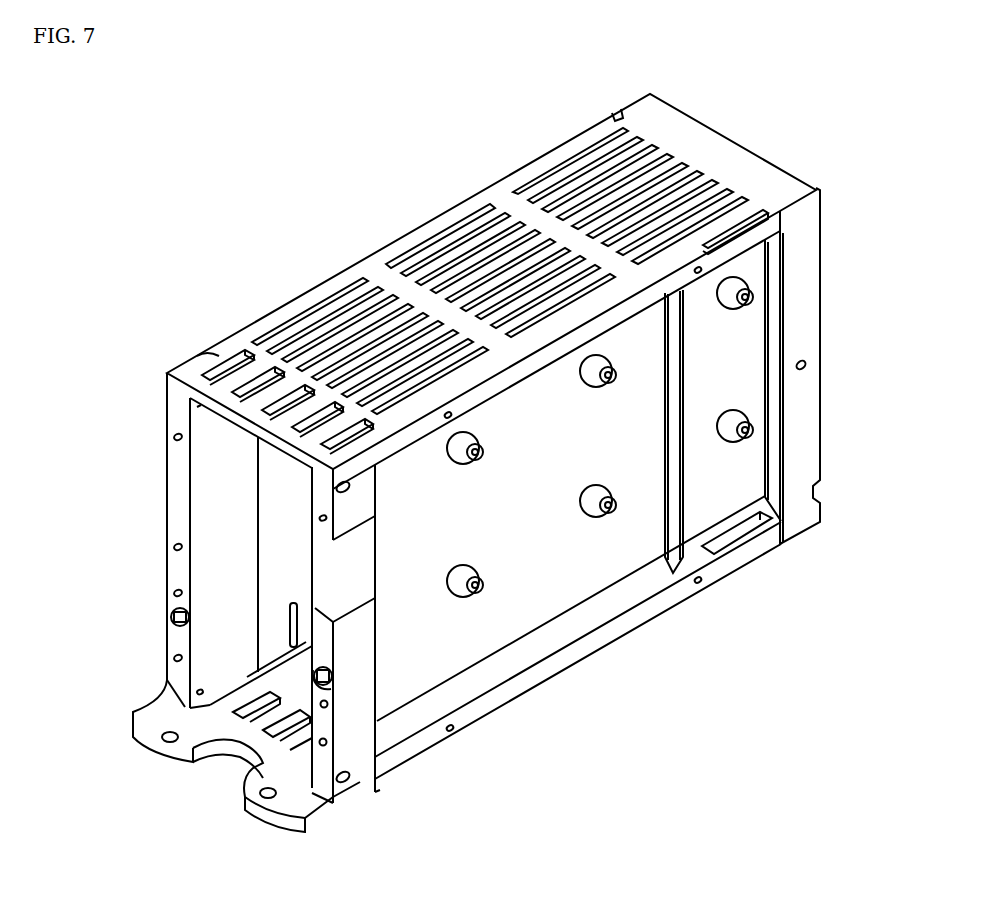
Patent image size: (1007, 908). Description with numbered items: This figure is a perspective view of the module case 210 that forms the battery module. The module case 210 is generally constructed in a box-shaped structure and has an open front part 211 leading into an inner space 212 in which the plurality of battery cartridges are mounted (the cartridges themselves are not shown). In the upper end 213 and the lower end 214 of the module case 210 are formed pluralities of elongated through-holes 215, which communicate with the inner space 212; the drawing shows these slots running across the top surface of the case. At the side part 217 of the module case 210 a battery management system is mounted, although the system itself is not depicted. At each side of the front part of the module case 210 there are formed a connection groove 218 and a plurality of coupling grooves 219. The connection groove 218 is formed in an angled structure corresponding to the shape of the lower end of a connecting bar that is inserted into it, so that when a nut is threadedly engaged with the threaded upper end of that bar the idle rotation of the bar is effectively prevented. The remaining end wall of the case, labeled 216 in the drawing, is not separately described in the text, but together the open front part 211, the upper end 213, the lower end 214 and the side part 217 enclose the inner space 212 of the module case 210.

The module case 210 is at (229, 205).
The open front part 211 is at (172, 484).
The inner space 212 is at (230, 573).
The upper end 213 is at (383, 278).
The lower end 214 is at (557, 673).
The elongated through-holes 215 is at (448, 250).
The right side bracket 216 is at (757, 149).
The side part 217 is at (603, 568).
The connection groove 218 is at (333, 670).
The coupling grooves 219 is at (332, 707).